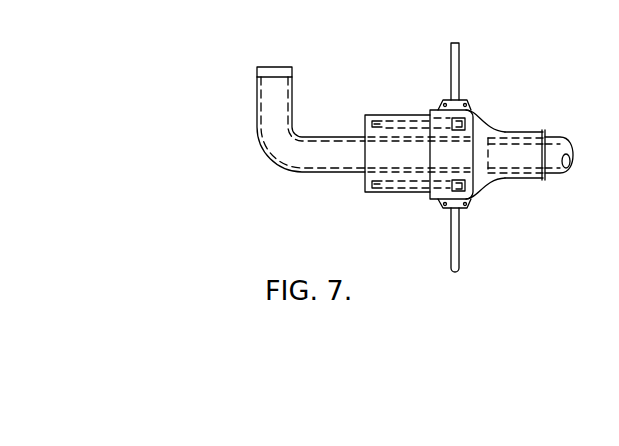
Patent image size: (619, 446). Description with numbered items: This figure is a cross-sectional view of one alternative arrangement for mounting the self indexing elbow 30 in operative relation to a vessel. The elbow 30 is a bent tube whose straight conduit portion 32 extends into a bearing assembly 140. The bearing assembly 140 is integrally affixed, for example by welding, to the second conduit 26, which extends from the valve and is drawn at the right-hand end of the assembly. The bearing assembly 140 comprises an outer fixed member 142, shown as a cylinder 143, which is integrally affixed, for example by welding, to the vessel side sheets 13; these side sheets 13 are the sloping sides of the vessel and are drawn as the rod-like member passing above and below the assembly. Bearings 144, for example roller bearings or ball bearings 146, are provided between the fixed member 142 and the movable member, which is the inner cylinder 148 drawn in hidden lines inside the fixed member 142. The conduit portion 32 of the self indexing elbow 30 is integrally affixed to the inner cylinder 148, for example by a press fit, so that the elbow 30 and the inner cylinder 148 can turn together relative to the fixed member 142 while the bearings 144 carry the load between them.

The sloping side 13 is at (460, 53).
The second conduit 26 is at (562, 131).
The self indexing elbow 30 is at (271, 171).
The conduit portion 32 is at (257, 97).
The bearing assembly 140 is at (440, 163).
The outer fixed member 142 is at (507, 124).
The cylinder 143 is at (480, 110).
The bearings 144 is at (393, 195).
The ball bearings 146 is at (383, 120).
The inner cylinder 148 is at (400, 120).